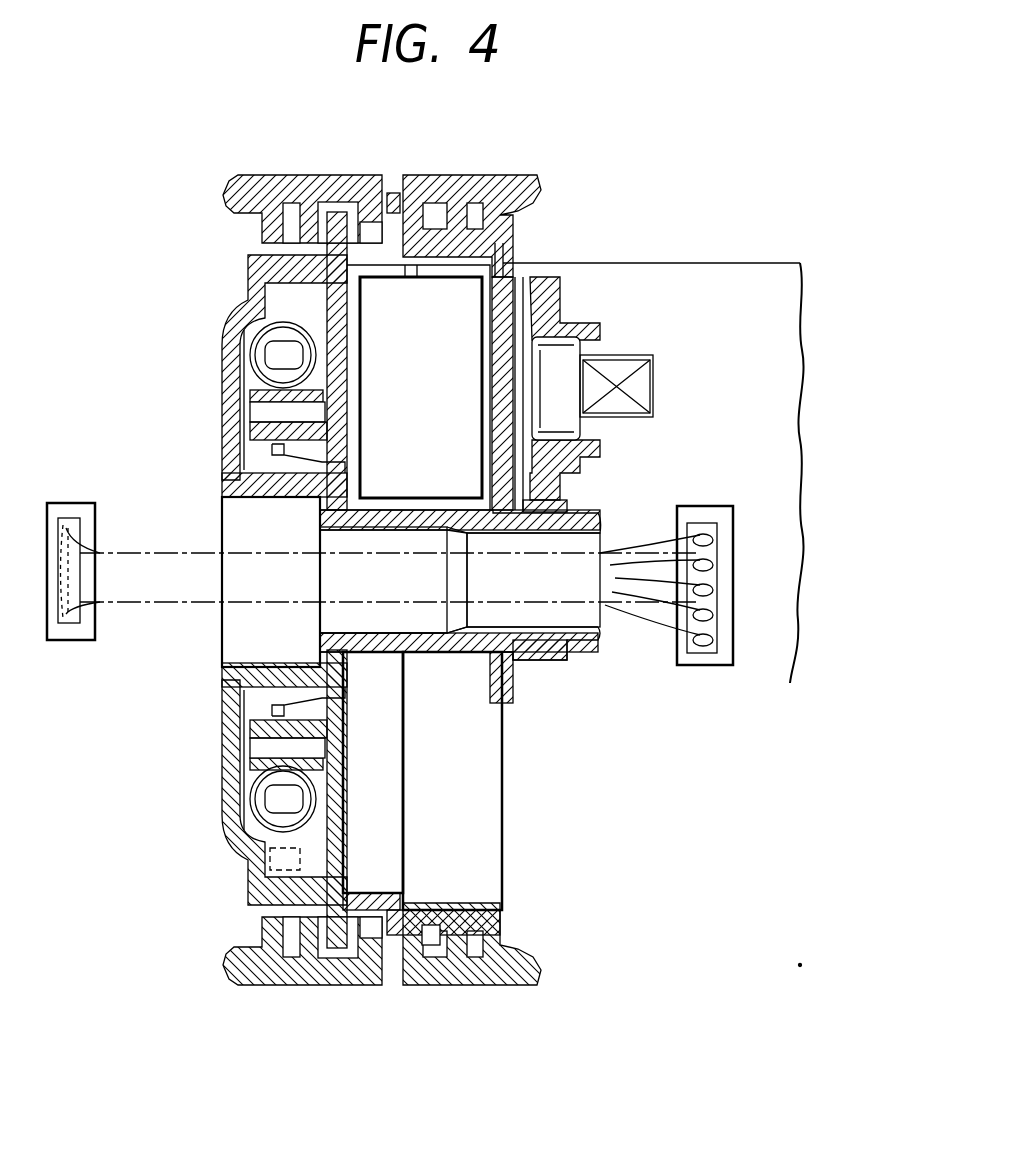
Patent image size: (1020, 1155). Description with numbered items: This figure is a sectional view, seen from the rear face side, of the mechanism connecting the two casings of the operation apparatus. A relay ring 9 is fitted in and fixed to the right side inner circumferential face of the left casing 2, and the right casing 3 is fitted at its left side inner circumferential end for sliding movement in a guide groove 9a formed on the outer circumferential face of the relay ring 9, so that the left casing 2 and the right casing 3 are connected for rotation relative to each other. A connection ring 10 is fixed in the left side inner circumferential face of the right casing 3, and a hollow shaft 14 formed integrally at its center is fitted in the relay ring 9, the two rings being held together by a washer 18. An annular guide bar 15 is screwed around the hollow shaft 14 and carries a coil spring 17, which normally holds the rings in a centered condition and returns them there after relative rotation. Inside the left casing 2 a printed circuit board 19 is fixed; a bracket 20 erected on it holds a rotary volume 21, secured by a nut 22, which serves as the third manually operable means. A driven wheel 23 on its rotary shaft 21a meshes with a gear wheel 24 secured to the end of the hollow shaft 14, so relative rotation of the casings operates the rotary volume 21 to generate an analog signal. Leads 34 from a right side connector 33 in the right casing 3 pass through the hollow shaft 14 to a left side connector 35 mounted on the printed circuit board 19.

The left casing 2 is at (484, 176).
The right casing 3 is at (258, 176).
The relay ring 9 is at (432, 945).
The guide groove 9a is at (334, 210).
The connection ring 10 is at (225, 822).
The hollow shaft 14 is at (446, 652).
The annular guide bar 15 is at (270, 350).
The coil spring 17 is at (222, 376).
The washer 18 is at (290, 488).
The printed circuit board 19 is at (783, 491).
The bracket 20 is at (500, 300).
The rotary volume 21 is at (392, 290).
The rotary shaft 21a is at (655, 388).
The nut 22 is at (538, 368).
The driven wheel 23 is at (558, 478).
The gear wheel 24 is at (548, 660).
The right side connector 33 is at (76, 640).
The leads 34 is at (200, 603).
The left side connector 35 is at (708, 666).